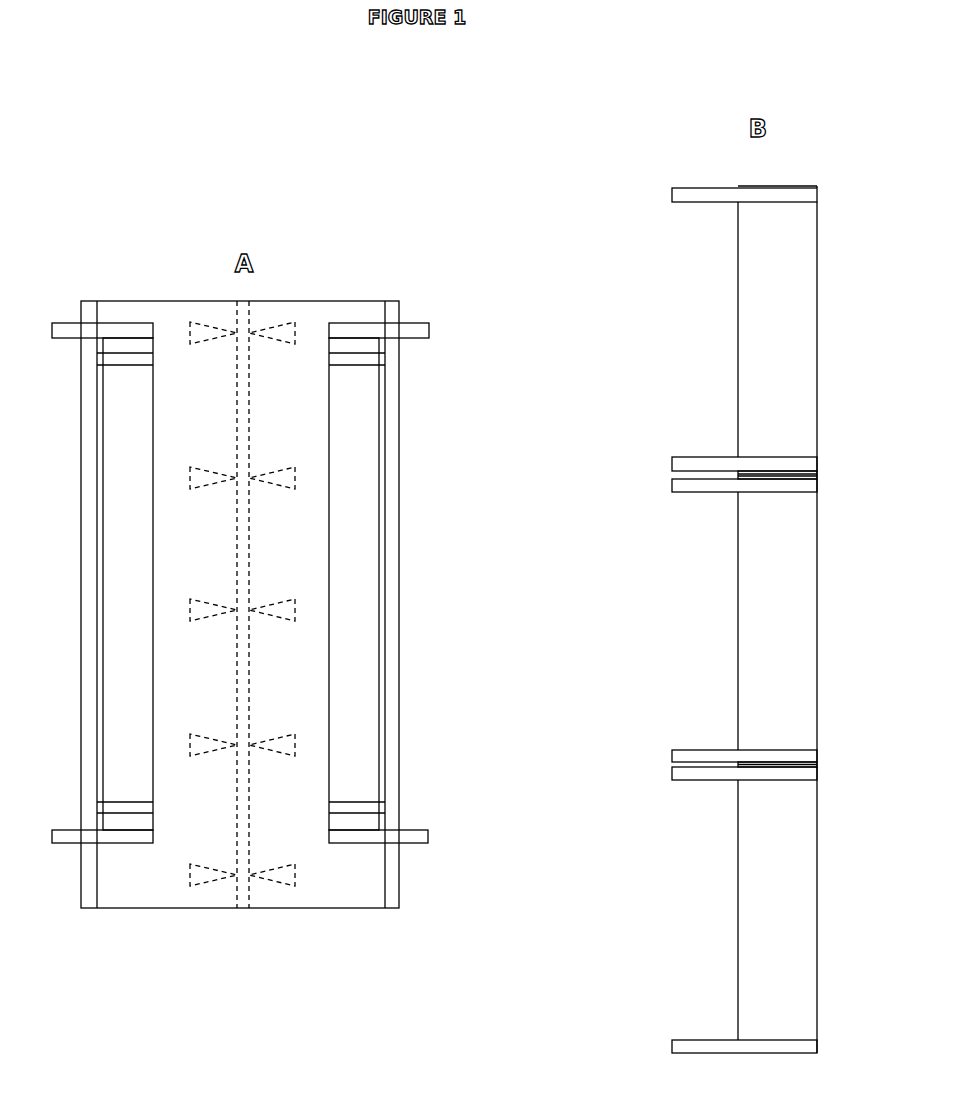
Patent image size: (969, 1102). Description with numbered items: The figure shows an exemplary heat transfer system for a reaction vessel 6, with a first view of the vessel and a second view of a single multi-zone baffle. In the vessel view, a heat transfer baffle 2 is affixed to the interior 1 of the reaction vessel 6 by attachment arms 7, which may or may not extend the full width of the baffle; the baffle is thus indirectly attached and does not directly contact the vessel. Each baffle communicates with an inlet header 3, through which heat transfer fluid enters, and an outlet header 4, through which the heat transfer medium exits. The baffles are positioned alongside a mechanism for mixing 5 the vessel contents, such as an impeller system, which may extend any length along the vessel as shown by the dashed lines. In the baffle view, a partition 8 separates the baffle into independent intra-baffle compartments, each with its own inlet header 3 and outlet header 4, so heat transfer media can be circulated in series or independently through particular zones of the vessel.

The interior 1 is at (389, 451).
The heat transfer baffle 2 is at (241, 584).
The inlet header 3 is at (419, 757).
The outlet header 4 is at (419, 486).
The mechanism for mixing 5 is at (259, 604).
The reaction vessel 6 is at (79, 552).
The attachment arms 7 is at (156, 359).
The partition 8 is at (821, 475).